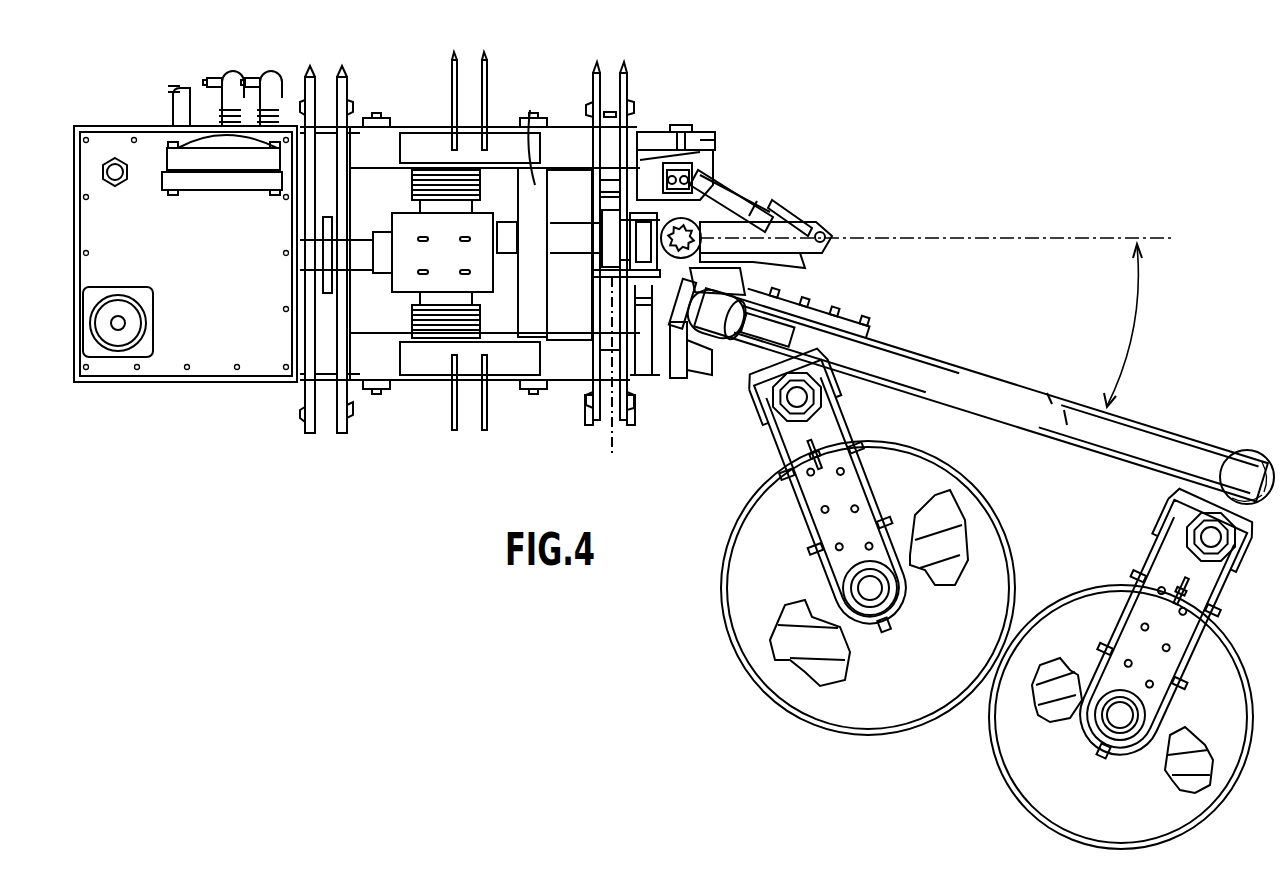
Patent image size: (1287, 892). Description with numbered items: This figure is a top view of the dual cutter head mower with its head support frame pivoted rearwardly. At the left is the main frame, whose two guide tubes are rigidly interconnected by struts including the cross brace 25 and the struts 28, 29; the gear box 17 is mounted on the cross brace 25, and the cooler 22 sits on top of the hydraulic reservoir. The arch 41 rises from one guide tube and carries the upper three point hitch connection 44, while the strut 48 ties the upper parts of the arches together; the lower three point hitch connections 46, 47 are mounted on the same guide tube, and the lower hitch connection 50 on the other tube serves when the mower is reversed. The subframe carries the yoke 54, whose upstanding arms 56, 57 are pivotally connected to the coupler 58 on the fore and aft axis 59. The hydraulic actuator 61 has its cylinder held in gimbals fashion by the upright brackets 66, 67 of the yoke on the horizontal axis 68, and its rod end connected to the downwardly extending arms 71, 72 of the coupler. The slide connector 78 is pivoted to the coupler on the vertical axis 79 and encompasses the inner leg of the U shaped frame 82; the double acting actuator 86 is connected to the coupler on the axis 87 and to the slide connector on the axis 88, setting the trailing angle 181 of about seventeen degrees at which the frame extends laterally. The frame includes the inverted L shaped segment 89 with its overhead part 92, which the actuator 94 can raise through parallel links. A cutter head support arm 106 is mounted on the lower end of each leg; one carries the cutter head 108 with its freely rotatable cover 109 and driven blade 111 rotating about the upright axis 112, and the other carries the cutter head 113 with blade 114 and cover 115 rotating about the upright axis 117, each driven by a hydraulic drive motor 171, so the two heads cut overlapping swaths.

The gear box 17 is at (430, 220).
The cooler 22 is at (163, 150).
The strut (cross brace) 25 is at (400, 190).
The strut 28 is at (600, 312).
The strut 29 is at (610, 360).
The arch 41 is at (508, 150).
The three point hitch connection 44 is at (485, 75).
The lower three point hitch connection 46 is at (624, 78).
The lower three point hitch connection 47 is at (342, 80).
The strut 48 is at (533, 130).
The lower three point hitch connection 50 is at (590, 425).
The yoke 54 is at (712, 132).
The upstanding arm 56 is at (697, 130).
The upstanding arm 57 is at (660, 320).
The coupler 58 is at (700, 252).
The fore and aft extending axis 59 is at (680, 123).
The hydraulic actuator 61 is at (550, 222).
The upright bracket 66 is at (600, 195).
The upright bracket 67 is at (600, 276).
The fore and aft horizontal axis 68 is at (612, 445).
The downwardly extending arm 71 is at (704, 198).
The downwardly extending arm 72 is at (655, 300).
The slide connector 78 is at (795, 270).
The vertical axis 79 is at (746, 205).
The U shaped frame 82 is at (974, 375).
The double acting hydraulic actuator 86 is at (780, 212).
The axis 87 is at (692, 172).
The axis 88 is at (818, 226).
The inverted L shaped segment 89 is at (1064, 405).
The overhead part 92 is at (1018, 396).
The double acting hydraulic actuator 94 is at (712, 340).
The cutter head support arm 106 is at (790, 488).
The cutter head 108 is at (723, 588).
The freely rotatable cover 109 is at (848, 708).
The driven cutting blade 111 is at (800, 660).
The upright axis 112 is at (872, 588).
The cutter head 113 is at (1078, 596).
The cutting blade 114 is at (1052, 660).
The freely rotatable cover 115 is at (990, 730).
The upright axis 117 is at (1118, 718).
The hydraulic drive motor 171 is at (795, 400).
The trailing angle 181 is at (1141, 336).